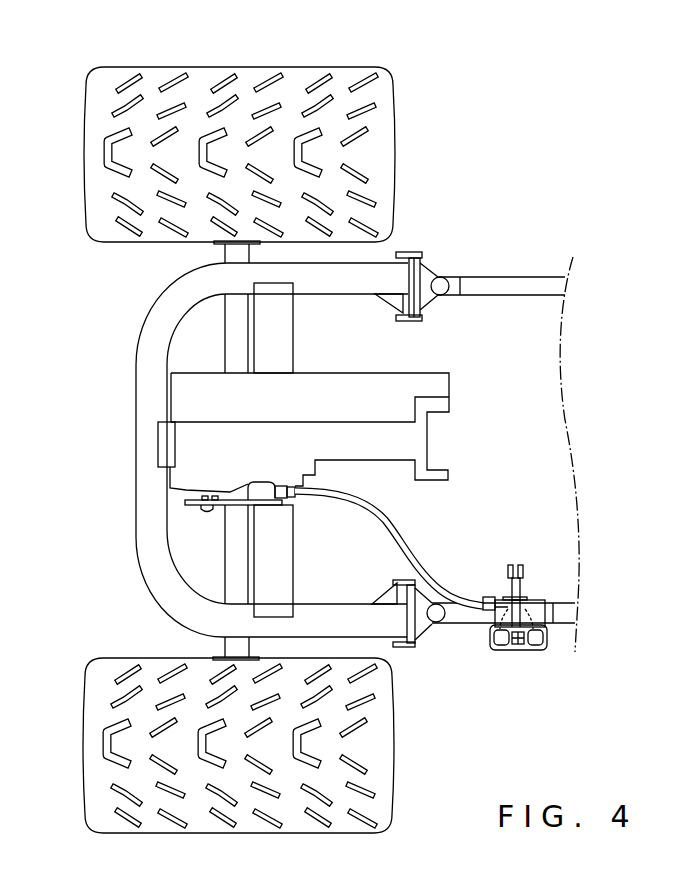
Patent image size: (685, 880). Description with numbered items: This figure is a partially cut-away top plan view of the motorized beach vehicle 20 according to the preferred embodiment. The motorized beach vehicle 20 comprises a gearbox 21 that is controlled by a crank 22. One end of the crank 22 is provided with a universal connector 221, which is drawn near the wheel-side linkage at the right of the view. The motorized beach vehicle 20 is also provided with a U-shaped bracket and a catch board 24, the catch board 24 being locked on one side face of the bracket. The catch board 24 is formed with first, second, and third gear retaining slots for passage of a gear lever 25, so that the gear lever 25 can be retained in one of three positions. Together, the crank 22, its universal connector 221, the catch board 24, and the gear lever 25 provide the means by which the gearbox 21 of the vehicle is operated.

The motorized beach vehicle 20 is at (559, 241).
The gearbox 21 is at (185, 472).
The crank 22 is at (393, 532).
The universal connector 221 is at (523, 600).
The catch board 24 is at (502, 652).
The gear lever 25 is at (536, 652).